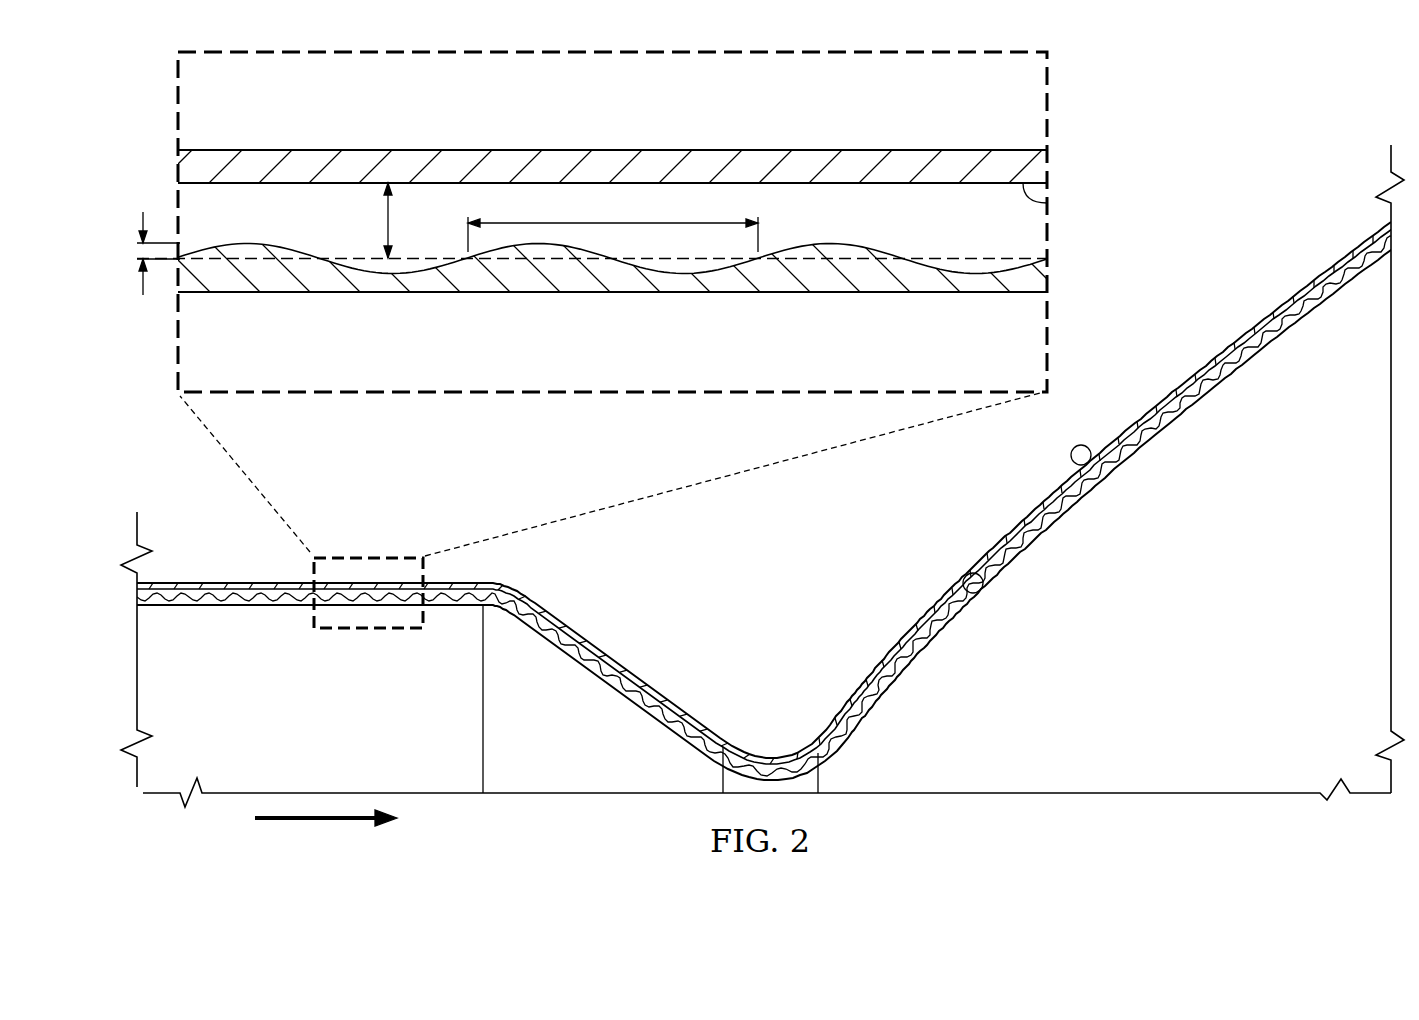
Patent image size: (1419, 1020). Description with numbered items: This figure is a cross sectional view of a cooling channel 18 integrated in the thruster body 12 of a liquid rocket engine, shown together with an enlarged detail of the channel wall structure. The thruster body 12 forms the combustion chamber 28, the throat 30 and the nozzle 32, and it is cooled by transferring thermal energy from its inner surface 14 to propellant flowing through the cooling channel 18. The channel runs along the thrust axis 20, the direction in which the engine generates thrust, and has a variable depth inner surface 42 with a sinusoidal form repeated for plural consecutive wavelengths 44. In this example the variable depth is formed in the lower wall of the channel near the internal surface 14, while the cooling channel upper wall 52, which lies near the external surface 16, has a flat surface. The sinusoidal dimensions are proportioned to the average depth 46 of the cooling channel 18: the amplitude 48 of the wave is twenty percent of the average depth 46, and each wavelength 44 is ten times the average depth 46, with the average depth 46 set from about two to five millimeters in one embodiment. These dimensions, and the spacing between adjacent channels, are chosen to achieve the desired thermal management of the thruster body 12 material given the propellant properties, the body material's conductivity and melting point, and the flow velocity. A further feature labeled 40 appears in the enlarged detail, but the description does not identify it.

The thruster body 12 is at (228, 580).
The inner surface 14 is at (730, 292).
The external surface 16 is at (862, 150).
The cooling channel 18 is at (940, 231).
The thrust axis 20 is at (315, 822).
The combustion chamber 28 is at (289, 714).
The throat 30 is at (848, 776).
The nozzle 32 is at (1212, 610).
The inner surface 40 is at (268, 200).
The variable depth inner surface 42 is at (1047, 203).
The wavelength 44 is at (617, 223).
The average depth 46 is at (385, 222).
The amplitude 48 is at (143, 212).
The cooling channel upper wall 52 is at (755, 158).